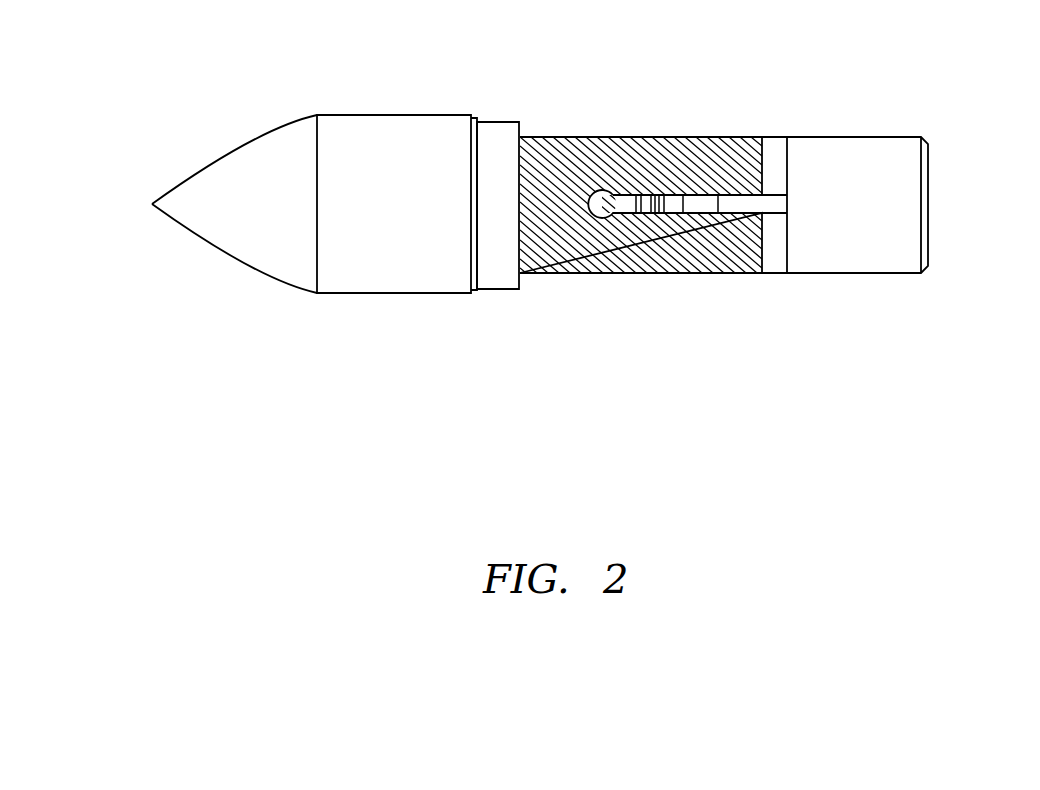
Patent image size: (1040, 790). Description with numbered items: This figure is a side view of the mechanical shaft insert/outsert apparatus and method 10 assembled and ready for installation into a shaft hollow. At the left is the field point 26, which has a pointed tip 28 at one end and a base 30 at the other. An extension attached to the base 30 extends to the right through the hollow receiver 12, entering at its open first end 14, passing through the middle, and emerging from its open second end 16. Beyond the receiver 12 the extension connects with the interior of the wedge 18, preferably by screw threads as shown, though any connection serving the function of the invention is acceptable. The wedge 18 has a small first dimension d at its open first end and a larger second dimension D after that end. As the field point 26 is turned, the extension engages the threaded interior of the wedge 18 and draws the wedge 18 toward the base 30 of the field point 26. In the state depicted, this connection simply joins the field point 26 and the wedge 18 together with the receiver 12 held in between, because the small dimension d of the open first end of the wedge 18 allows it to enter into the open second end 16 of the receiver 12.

The mechanical shaft insert/outsert apparatus and method 10 is at (710, 415).
The receiver 12 is at (655, 137).
The open first end 14 is at (519, 118).
The open second end 16 is at (738, 137).
The wedge 18 is at (865, 150).
The field point 26 is at (352, 268).
The tip 28 is at (152, 204).
The base 30 is at (466, 296).
The second dimension D is at (893, 222).
The first dimension d is at (769, 280).